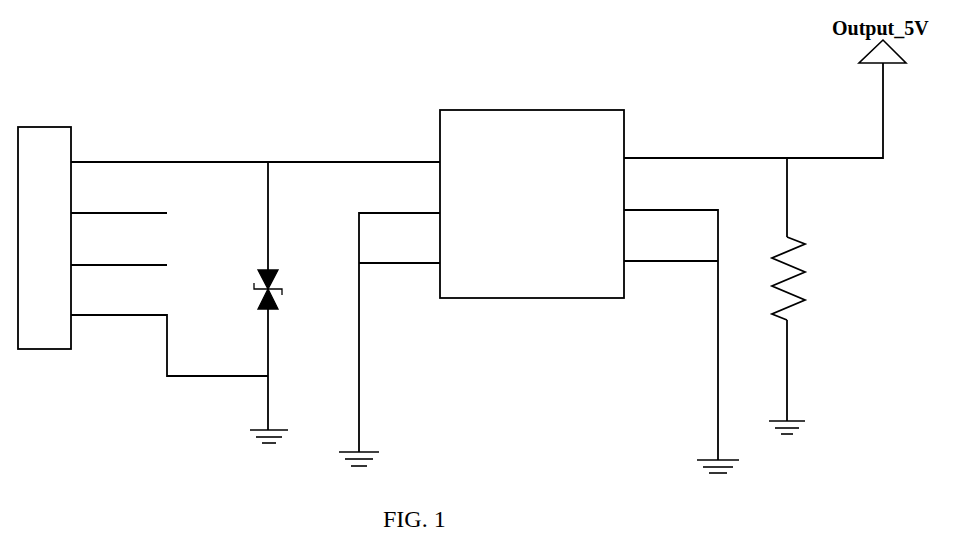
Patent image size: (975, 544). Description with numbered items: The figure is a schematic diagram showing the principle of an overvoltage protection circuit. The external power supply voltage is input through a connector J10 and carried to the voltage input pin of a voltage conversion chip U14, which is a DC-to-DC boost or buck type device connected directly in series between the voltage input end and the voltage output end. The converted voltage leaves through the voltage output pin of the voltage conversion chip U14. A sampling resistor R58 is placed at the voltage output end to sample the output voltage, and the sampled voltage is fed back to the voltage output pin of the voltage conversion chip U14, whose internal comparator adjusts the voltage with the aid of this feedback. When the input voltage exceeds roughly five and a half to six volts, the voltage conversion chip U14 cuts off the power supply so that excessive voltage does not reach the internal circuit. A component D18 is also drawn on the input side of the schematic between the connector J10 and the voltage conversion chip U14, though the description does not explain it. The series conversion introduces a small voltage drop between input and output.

The connector J10 is at (143, 237).
The voltage conversion chip U14 is at (539, 276).
The TVS diode D18 is at (283, 302).
The sampling resistor R58 is at (804, 296).